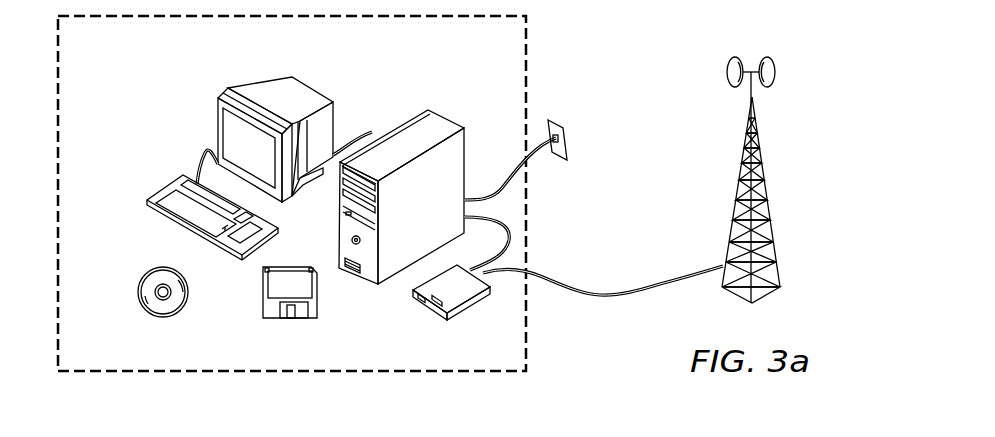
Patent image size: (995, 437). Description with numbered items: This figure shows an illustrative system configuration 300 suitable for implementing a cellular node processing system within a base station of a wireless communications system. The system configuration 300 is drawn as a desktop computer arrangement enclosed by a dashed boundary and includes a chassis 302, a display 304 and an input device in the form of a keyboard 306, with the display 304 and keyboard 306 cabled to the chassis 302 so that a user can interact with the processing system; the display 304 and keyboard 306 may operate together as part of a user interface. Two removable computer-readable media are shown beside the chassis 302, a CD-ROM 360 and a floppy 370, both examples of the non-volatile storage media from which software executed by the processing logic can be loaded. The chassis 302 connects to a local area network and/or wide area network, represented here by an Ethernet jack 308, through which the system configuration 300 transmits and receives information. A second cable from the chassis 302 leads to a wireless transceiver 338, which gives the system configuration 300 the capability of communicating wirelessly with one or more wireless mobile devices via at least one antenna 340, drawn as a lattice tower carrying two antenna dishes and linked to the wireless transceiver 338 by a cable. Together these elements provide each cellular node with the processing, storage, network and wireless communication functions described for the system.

The system configuration 300 is at (536, 77).
The chassis 302 is at (410, 118).
The display 304 is at (277, 82).
The keyboard 306 is at (165, 184).
The Ethernet jack 308 is at (568, 143).
The wireless transceiver 338 is at (472, 300).
The antenna 340 is at (763, 55).
The CD-ROM 360 is at (138, 292).
The floppy disk 370 is at (262, 297).